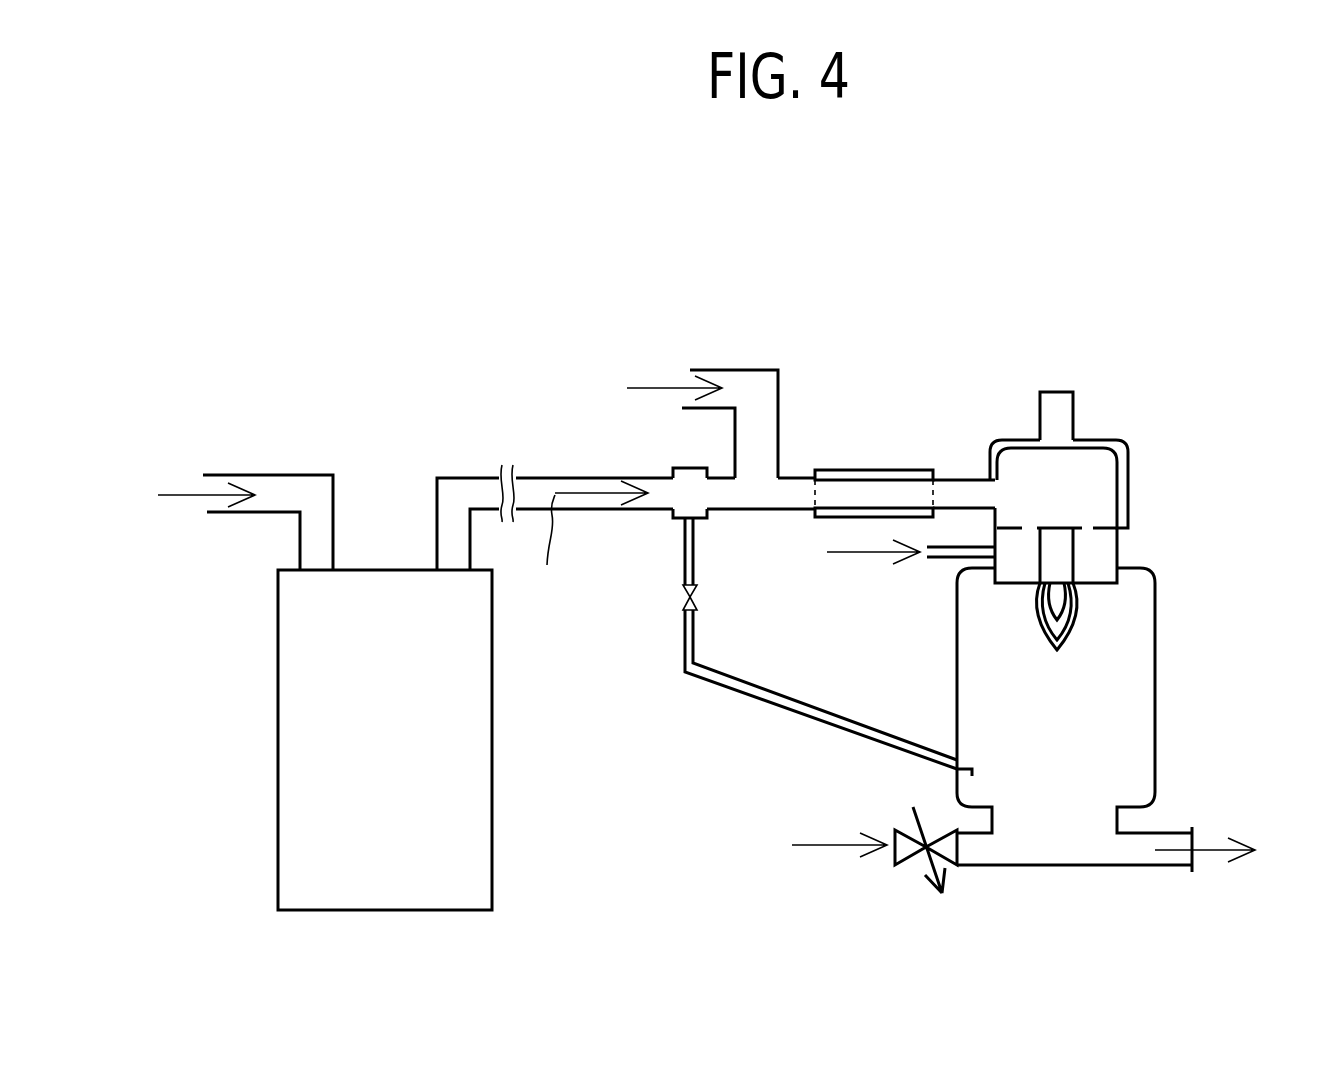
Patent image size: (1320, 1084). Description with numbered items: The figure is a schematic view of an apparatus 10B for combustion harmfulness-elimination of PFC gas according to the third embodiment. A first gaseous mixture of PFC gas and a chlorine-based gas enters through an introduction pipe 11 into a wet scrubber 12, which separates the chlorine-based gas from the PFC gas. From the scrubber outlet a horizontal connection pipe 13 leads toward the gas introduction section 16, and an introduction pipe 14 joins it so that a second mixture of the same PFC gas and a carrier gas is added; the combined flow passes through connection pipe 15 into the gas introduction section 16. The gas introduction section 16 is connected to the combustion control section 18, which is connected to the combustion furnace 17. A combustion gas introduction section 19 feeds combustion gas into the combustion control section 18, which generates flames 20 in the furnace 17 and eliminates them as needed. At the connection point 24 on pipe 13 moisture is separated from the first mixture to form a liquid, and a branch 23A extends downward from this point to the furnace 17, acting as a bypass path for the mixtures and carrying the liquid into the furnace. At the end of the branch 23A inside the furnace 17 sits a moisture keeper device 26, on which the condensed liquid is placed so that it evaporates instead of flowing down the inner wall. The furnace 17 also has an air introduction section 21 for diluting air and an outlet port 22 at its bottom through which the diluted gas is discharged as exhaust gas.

The apparatus for combustion harmfulness-elimination of PFC gas 10B is at (877, 257).
The introduction pipe 11 is at (272, 475).
The wet scrubber 12 is at (302, 843).
The connection pipe 13 is at (578, 478).
The introduction pipe 14 is at (778, 425).
The connection pipe 15 is at (875, 470).
The gas introduction section 16 is at (1105, 470).
The combustion furnace 17 is at (1140, 718).
The combustion control section 18 is at (1062, 557).
The combustion gas introduction section 19 is at (948, 557).
The flames 20 is at (1066, 636).
The air introduction section 21 is at (898, 850).
The outlet port 22 is at (1197, 858).
The branch 23A is at (758, 695).
The connection point 24 is at (672, 515).
The moisture keeper device 26 is at (998, 753).